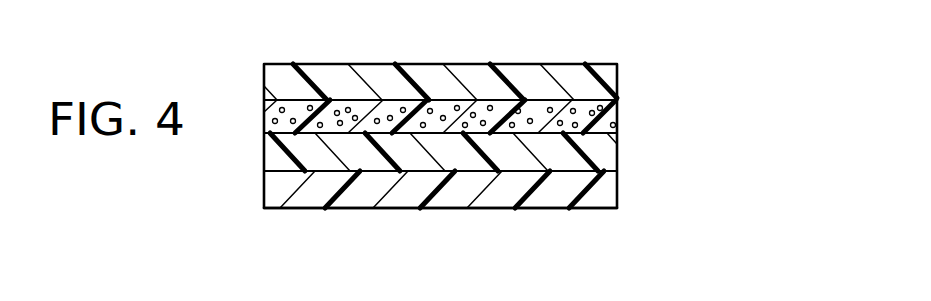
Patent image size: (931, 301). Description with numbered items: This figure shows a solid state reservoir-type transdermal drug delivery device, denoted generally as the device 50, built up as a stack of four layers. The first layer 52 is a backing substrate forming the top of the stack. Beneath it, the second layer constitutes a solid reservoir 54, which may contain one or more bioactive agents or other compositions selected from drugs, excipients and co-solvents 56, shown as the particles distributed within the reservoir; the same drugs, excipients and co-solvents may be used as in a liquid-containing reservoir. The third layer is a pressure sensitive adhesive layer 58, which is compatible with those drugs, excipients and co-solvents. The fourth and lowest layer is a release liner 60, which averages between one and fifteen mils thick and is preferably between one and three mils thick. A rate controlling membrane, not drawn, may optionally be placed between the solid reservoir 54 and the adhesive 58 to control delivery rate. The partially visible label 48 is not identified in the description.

The transdermal device (partial label) 48 is at (539, 8).
The solid state reservoir-type transdermal drug delivery device 50 is at (693, 82).
The first layer 52 is at (572, 75).
The solid reservoir 54 is at (588, 110).
The drugs, excipients and co-solvents 56 is at (574, 137).
The pressure sensitive adhesive layer 58 is at (597, 153).
The release liner 60 is at (498, 193).